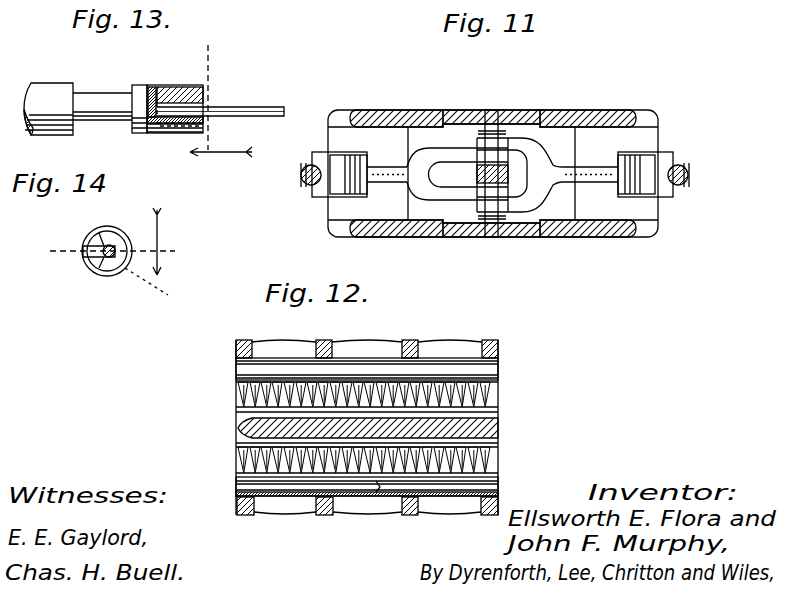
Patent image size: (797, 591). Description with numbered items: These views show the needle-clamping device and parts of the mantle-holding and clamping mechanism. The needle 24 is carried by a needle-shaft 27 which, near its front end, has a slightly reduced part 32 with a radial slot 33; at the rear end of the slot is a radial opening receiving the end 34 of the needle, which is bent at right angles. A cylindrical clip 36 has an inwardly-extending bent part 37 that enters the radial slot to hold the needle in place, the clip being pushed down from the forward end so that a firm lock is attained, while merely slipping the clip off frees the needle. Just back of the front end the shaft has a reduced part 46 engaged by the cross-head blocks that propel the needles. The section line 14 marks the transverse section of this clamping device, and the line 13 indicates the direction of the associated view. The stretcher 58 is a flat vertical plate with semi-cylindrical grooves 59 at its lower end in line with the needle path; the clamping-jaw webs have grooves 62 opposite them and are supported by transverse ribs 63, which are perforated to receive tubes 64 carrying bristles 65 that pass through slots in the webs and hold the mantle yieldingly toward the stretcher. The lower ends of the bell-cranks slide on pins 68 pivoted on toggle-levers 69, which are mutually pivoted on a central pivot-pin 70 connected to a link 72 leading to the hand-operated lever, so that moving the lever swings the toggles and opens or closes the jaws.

In FIG. 14, the section line 13 is at (177, 241).
In FIG. 13, the section line 14 is at (221, 116).
In FIG. 13, the needle 24 is at (272, 107).
In FIG. 14, the needle 24 is at (118, 262).
In FIG. 13, the needle-shaft 27 is at (35, 92).
In FIG. 13, the reduced part 32 is at (205, 100).
In FIG. 14, the reduced part 32 is at (104, 260).
In FIG. 13, the radial slot 33 is at (181, 90).
In FIG. 14, the radial slot 33 is at (105, 240).
In FIG. 13, the bent end of needle 34 is at (152, 92).
In FIG. 14, the bent end of needle 34 is at (161, 292).
In FIG. 13, the cylindrical clip 36 is at (204, 127).
In FIG. 14, the cylindrical clip 36 is at (85, 243).
In FIG. 13, the inwardly-extending bent part 37 is at (178, 122).
In FIG. 14, the inwardly-extending bent part 37 is at (96, 262).
In FIG. 13, the reduced part of needle-shaft 46 is at (93, 105).
In FIG. 12, the stretcher 58 is at (262, 431).
In FIG. 12, the semi-cylindrical grooves 59 is at (265, 439).
In FIG. 12, the grooves 62 is at (265, 412).
In FIG. 12, the transverse ribs 63 is at (410, 340).
In FIG. 12, the tubes 64 is at (490, 369).
In FIG. 12, the bristles 65 is at (480, 470).
In FIG. 11, the pins 68 is at (305, 182).
In FIG. 11, the toggle-levers 69 is at (553, 179).
In FIG. 11, the central pivot-pin 70 is at (501, 124).
In FIG. 11, the link 72 is at (482, 172).